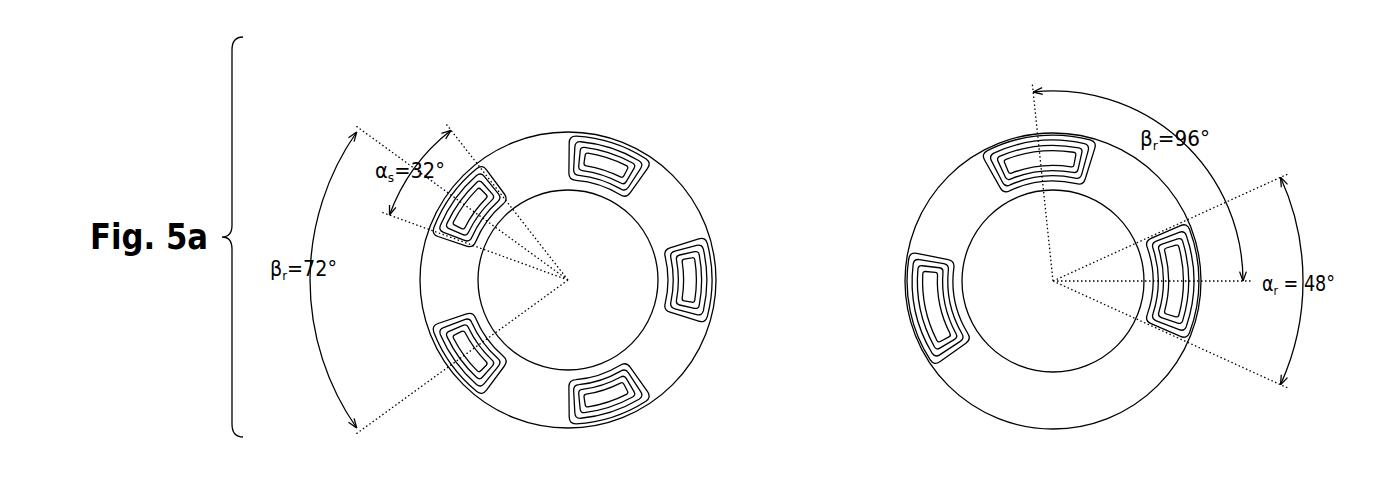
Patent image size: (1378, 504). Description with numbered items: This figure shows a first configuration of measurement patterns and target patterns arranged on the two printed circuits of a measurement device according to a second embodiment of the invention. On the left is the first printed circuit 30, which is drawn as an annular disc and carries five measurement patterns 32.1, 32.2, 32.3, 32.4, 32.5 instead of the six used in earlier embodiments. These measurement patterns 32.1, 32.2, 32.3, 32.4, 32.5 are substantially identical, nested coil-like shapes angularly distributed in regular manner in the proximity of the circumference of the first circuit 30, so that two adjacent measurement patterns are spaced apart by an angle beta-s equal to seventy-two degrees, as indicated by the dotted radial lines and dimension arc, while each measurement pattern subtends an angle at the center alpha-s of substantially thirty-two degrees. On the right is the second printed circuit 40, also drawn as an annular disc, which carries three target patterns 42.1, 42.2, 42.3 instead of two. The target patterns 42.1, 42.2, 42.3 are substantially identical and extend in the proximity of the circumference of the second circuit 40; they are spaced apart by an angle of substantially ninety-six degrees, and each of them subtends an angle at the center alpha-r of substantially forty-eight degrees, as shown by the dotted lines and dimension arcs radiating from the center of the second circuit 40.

The first printed circuit 30 is at (700, 157).
The measurement pattern 32.1 is at (711, 285).
The measurement pattern 32.2 is at (625, 155).
The measurement pattern 32.3 is at (490, 211).
The measurement pattern 32.4 is at (469, 386).
The measurement pattern 32.5 is at (617, 410).
The second printed circuit 40 is at (1186, 113).
The target pattern 42.1 is at (1192, 306).
The target pattern 42.2 is at (996, 148).
The target pattern 42.3 is at (909, 298).